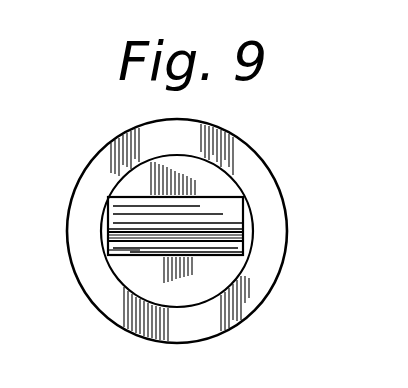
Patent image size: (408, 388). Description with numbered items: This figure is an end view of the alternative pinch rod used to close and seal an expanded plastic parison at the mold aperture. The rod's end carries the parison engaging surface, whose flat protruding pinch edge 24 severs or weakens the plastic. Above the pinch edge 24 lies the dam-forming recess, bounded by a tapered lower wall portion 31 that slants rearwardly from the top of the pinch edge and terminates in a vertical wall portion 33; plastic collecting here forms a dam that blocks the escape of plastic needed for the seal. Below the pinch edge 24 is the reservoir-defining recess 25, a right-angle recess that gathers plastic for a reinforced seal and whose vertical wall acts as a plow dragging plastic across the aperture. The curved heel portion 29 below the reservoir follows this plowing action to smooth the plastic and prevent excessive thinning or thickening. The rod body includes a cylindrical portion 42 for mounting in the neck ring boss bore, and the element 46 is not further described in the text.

The cylindrical portion 42 is at (226, 127).
The vertical wall portion 33 is at (249, 210).
The pinch edge 24 is at (246, 235).
The reservoir-defining recess 25 is at (236, 245).
The tapered lower wall portion 31 is at (124, 233).
The curved heel portion 29 is at (141, 251).
The key 46 is at (143, 197).